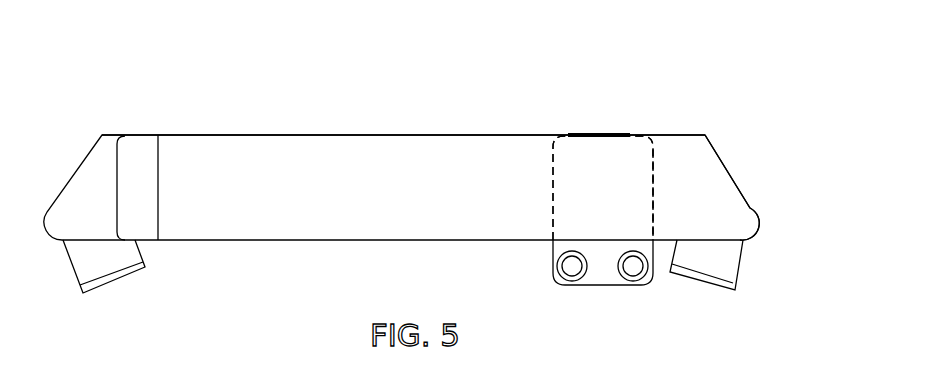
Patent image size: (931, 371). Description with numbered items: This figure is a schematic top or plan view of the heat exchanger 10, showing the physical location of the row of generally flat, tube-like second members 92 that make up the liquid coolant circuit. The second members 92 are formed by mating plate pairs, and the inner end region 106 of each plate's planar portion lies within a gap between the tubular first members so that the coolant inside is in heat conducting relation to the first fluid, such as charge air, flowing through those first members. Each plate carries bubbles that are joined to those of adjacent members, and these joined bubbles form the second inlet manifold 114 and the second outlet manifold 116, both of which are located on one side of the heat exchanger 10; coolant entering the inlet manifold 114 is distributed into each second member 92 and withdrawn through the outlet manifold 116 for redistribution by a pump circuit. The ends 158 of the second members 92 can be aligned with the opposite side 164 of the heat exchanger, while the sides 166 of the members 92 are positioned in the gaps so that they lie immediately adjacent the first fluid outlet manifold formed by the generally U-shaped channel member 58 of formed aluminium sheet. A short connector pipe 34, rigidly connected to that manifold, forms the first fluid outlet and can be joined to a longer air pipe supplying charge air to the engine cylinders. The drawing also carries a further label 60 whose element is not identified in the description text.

The heat exchanger 10 is at (246, 104).
The body 60 is at (310, 152).
The opposite side of the heat exchanger 164 is at (447, 135).
The ends of the second members 158 is at (592, 134).
The tube-like second member 92 is at (563, 152).
The inner end region 106 is at (618, 150).
The sides of the second members 166 is at (655, 181).
The U-shaped channel member 58 is at (742, 190).
The short connector pipe 34 is at (725, 255).
The second outlet manifold 116 is at (553, 261).
The second inlet manifold 114 is at (645, 278).